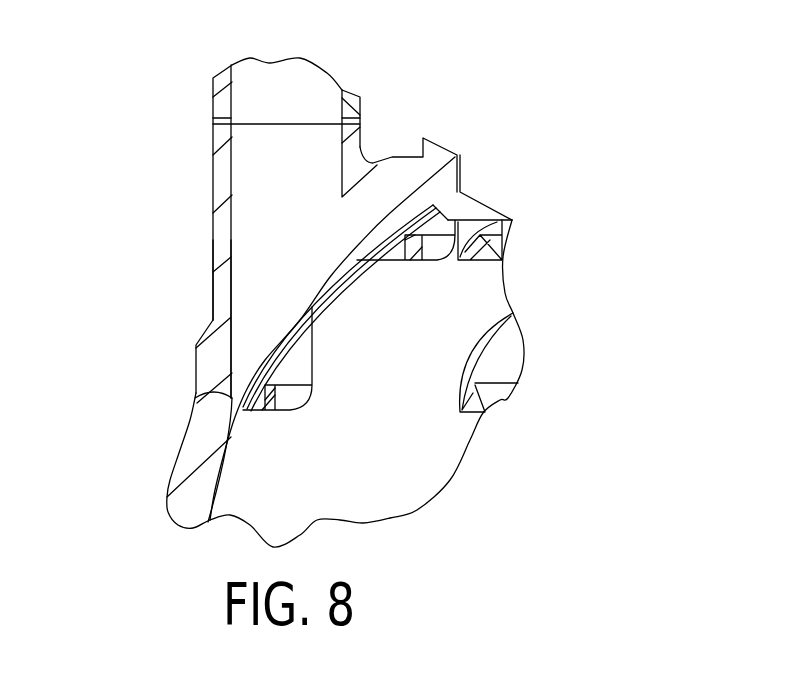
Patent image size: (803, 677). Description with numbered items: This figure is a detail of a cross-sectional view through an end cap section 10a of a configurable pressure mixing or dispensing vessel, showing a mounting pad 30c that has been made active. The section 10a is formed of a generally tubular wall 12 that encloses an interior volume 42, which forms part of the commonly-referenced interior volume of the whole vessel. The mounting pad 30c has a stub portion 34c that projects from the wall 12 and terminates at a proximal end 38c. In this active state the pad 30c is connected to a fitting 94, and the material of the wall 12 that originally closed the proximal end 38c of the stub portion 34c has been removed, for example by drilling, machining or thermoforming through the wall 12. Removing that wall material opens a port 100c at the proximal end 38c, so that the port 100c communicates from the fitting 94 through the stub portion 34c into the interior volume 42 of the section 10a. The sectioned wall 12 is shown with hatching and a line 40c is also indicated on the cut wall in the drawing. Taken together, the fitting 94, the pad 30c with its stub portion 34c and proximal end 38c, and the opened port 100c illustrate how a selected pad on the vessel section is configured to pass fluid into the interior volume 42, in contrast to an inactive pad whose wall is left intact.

The section 10a is at (631, 178).
The tubular wall 12 is at (342, 183).
The mounting pad 30c is at (461, 182).
The stub portion 34c is at (218, 252).
The proximal end 38c is at (193, 397).
The seal groove line 40c is at (213, 123).
The interior volume 42 is at (450, 338).
The fitting 94 is at (213, 106).
The port 100c is at (317, 290).